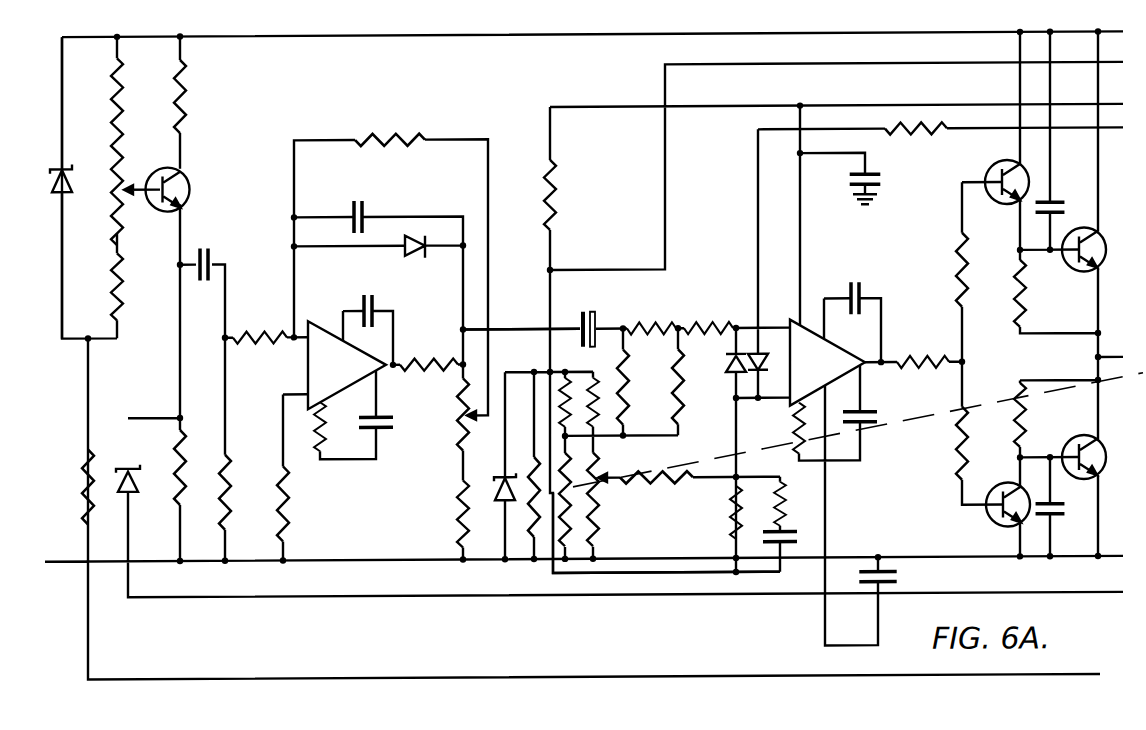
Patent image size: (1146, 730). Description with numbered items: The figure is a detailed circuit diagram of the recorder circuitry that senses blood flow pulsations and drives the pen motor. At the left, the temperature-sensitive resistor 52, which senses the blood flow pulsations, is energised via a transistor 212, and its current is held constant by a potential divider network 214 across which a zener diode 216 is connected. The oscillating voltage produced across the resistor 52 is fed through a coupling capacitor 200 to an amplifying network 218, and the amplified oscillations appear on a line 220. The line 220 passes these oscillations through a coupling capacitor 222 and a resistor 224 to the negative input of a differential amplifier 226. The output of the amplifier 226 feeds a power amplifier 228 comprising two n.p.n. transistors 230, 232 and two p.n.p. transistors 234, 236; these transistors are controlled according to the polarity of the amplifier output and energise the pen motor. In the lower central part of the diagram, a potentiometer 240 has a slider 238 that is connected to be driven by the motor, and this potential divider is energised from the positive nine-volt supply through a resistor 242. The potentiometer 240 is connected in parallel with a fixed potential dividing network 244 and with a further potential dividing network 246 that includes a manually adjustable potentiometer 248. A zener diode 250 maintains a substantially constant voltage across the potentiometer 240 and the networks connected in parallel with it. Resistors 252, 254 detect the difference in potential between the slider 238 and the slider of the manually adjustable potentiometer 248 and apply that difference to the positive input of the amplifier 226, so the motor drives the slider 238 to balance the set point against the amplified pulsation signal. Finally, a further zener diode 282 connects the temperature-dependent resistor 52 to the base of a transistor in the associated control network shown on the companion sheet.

The zener diode 216 is at (71, 168).
The potential divider network 214 is at (128, 156).
The transistor 212 is at (184, 186).
The coupling capacitor 200 is at (206, 288).
The zener diode 282 is at (118, 463).
The temperature-sensitive resistor 52 is at (192, 490).
The amplifying network 218 is at (397, 285).
The line 220 is at (507, 327).
The resistor 242 is at (556, 192).
The coupling capacitor 222 is at (598, 343).
The resistor 224 is at (658, 314).
The differential amplifier 226 is at (781, 291).
The n.p.n. transistor 230 is at (997, 200).
The n.p.n. transistor 232 is at (1068, 268).
The power amplifier 228 is at (1026, 371).
The p.n.p. transistor 236 is at (1072, 432).
The p.n.p. transistor 234 is at (993, 523).
The slider 238 is at (548, 556).
The potentiometer 240 is at (521, 484).
The zener diode 250 is at (497, 485).
The further potential dividing network 246 is at (603, 470).
The resistor 252 is at (858, 430).
The manually adjustable potentiometer 248 is at (618, 481).
The fixed potential dividing network 244 is at (575, 512).
The resistor 254 is at (733, 517).